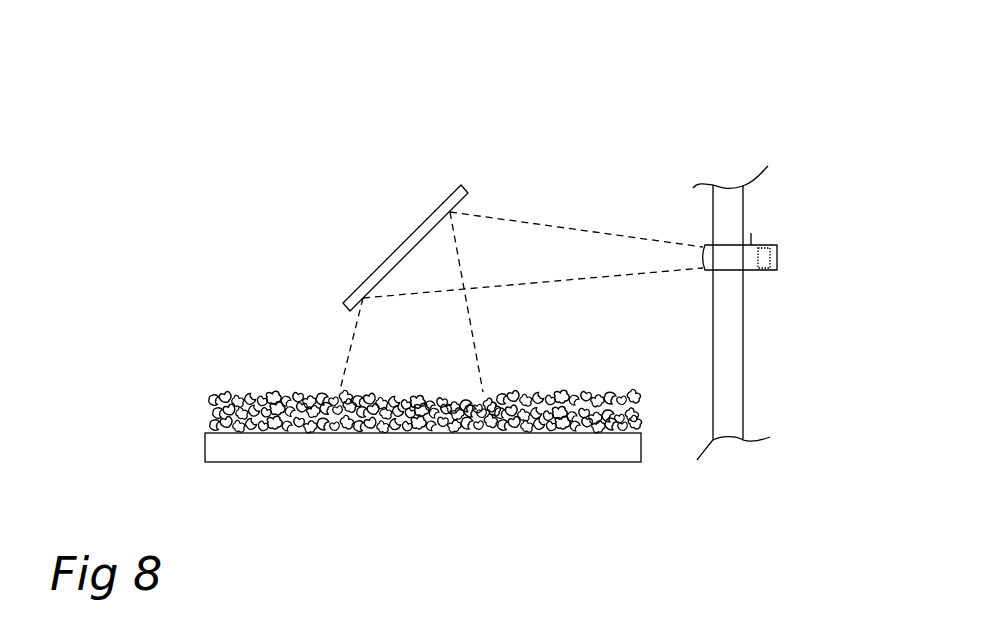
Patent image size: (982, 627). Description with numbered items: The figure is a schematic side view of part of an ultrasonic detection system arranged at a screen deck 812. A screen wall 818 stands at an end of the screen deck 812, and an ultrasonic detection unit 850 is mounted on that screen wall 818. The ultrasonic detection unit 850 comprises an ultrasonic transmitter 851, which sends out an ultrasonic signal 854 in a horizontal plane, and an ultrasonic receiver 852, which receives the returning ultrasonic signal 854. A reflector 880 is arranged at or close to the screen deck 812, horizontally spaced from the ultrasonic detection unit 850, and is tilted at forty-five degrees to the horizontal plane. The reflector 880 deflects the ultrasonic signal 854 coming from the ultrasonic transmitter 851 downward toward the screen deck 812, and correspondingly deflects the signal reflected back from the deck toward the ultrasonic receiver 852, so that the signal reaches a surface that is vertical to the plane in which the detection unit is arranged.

The screen deck 812 is at (301, 362).
The ultrasonic detection unit 850 is at (418, 143).
The reflector 880 is at (422, 222).
The ultrasonic signal 854 is at (598, 228).
The ultrasonic transmitter 851 is at (788, 234).
The ultrasonic receiver 852 is at (777, 258).
The screen wall 818 is at (743, 327).